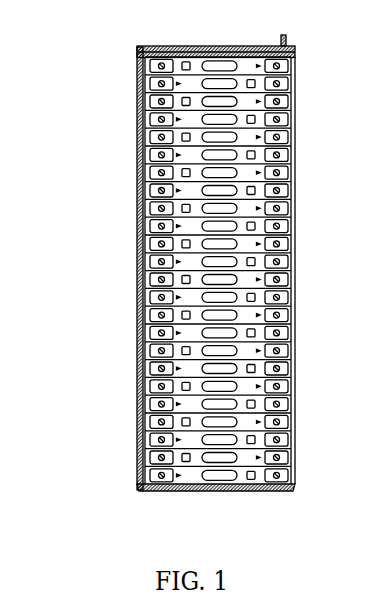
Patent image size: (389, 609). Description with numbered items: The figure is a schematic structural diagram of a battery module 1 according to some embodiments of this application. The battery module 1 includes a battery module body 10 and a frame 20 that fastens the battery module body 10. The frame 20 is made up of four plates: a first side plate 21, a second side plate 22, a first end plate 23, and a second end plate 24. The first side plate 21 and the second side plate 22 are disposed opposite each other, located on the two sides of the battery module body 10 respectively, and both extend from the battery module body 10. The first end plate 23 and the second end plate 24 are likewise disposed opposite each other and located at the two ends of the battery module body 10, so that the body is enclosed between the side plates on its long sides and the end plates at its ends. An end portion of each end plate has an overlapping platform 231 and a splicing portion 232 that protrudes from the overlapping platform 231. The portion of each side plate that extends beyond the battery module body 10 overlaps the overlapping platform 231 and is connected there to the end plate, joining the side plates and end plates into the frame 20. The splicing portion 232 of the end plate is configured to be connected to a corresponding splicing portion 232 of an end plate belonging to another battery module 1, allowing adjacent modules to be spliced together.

The battery module 1 is at (40, 40).
The battery module body 10 is at (140, 232).
The frame 20 is at (131, 187).
The first side plate 21 is at (294, 143).
The second side plate 22 is at (138, 115).
The first end plate 23 is at (296, 58).
The overlapping platform 231 is at (296, 52).
The splicing portion 232 is at (289, 46).
The second end plate 24 is at (292, 488).